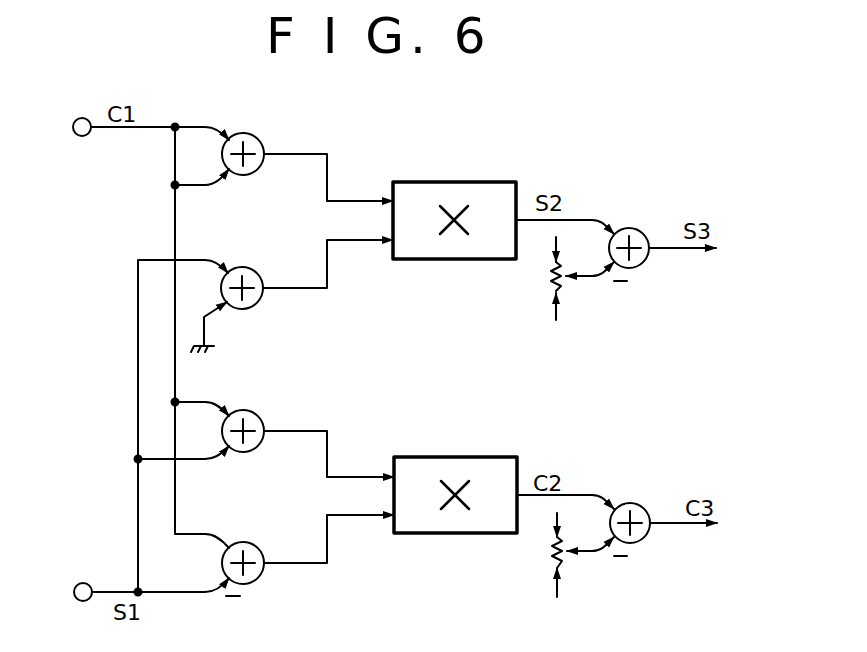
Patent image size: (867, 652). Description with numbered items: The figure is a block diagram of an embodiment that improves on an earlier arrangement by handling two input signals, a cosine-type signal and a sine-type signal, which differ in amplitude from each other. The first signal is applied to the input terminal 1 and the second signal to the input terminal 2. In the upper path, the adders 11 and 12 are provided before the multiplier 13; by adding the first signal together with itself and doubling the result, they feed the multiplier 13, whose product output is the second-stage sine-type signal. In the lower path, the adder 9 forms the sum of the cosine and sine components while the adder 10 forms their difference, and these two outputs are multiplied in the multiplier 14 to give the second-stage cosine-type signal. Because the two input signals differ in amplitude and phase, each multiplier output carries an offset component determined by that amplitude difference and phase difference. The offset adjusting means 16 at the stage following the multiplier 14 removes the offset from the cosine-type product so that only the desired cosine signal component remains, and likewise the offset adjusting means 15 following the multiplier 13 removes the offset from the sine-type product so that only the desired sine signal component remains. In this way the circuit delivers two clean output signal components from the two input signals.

The input terminal 1 is at (81, 118).
The input terminal 2 is at (83, 583).
The adder 9 is at (259, 446).
The adder 10 is at (257, 548).
The adder 11 is at (258, 170).
The adder 12 is at (255, 273).
The multiplier 13 is at (475, 182).
The multiplier 14 is at (480, 457).
The offset adjusting means 15 is at (643, 263).
The offset adjusting means 16 is at (644, 538).